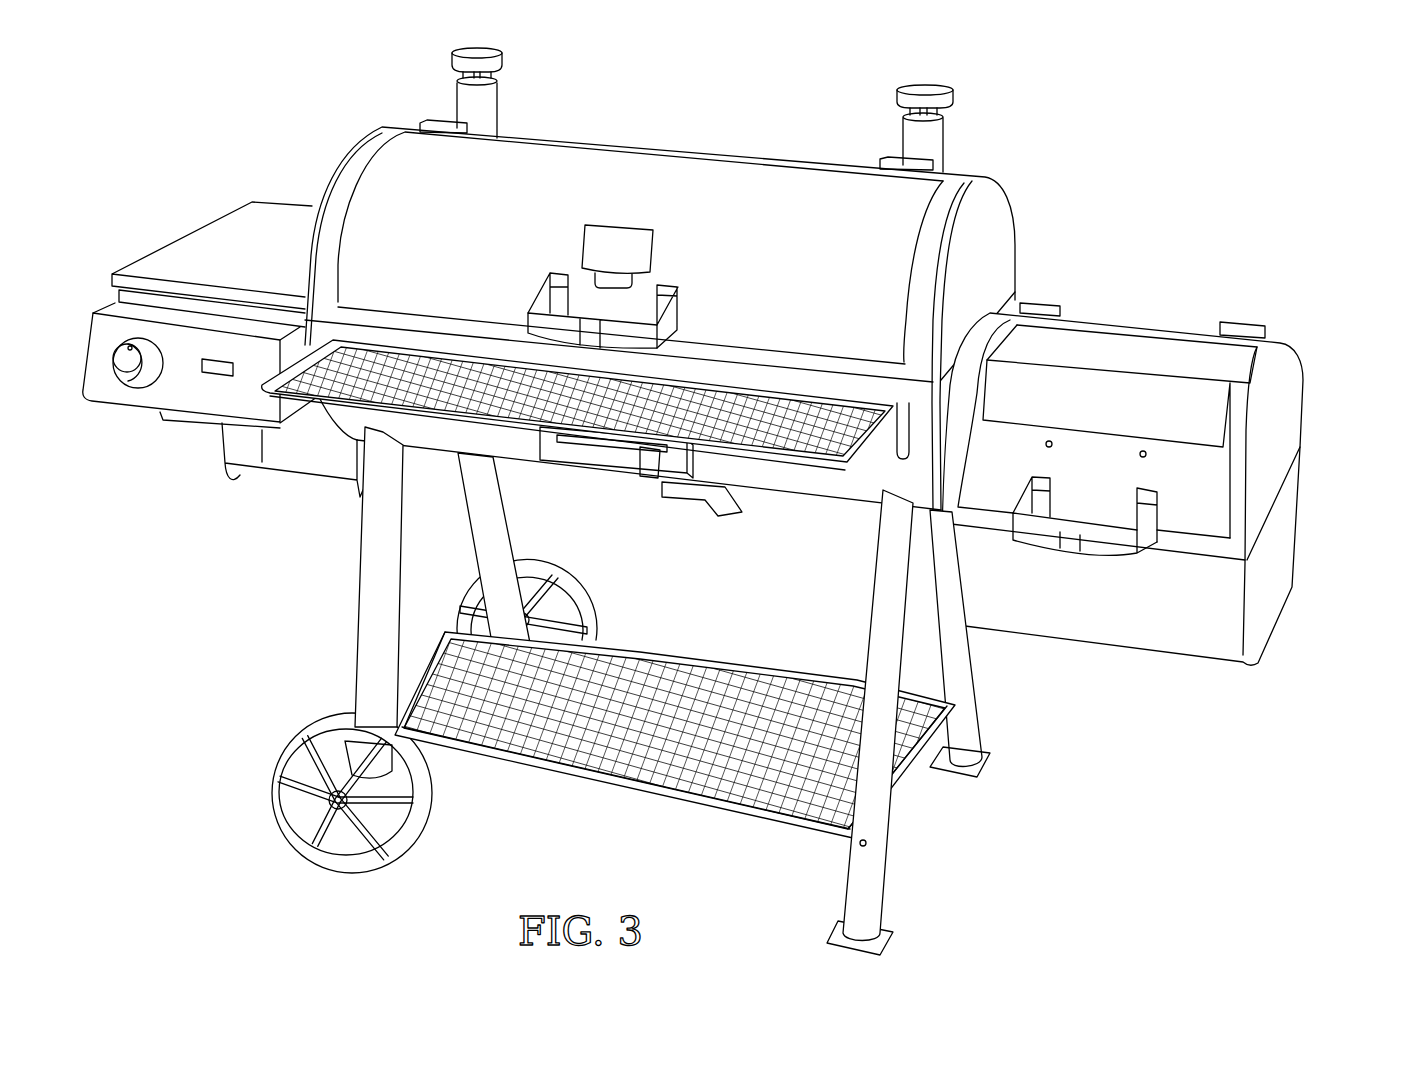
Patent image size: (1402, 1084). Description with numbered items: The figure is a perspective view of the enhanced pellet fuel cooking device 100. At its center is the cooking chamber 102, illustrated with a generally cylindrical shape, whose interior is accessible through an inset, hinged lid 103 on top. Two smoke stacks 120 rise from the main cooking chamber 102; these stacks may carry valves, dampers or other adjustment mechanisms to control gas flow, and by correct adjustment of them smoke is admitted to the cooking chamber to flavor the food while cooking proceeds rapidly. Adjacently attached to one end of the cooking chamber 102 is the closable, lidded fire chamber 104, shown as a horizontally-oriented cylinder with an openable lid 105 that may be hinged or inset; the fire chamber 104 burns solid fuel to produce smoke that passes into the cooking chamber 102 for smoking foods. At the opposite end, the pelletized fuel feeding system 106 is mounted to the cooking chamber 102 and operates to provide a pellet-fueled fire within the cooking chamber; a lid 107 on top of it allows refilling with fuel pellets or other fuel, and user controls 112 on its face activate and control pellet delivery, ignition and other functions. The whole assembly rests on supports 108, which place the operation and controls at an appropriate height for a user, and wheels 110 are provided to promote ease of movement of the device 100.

The cooking device 100 is at (1190, 173).
The cooking chamber 102 is at (1027, 222).
The lid 103 is at (668, 172).
The fire chamber 104 is at (1312, 404).
The lid 105 is at (1185, 525).
The pelletized fuel feeding system 106 is at (163, 392).
The lid 107 is at (186, 247).
The supports 108 is at (883, 858).
The wheels 110 is at (280, 822).
The user controls 112 is at (112, 358).
The smoke stacks 120 is at (458, 100).